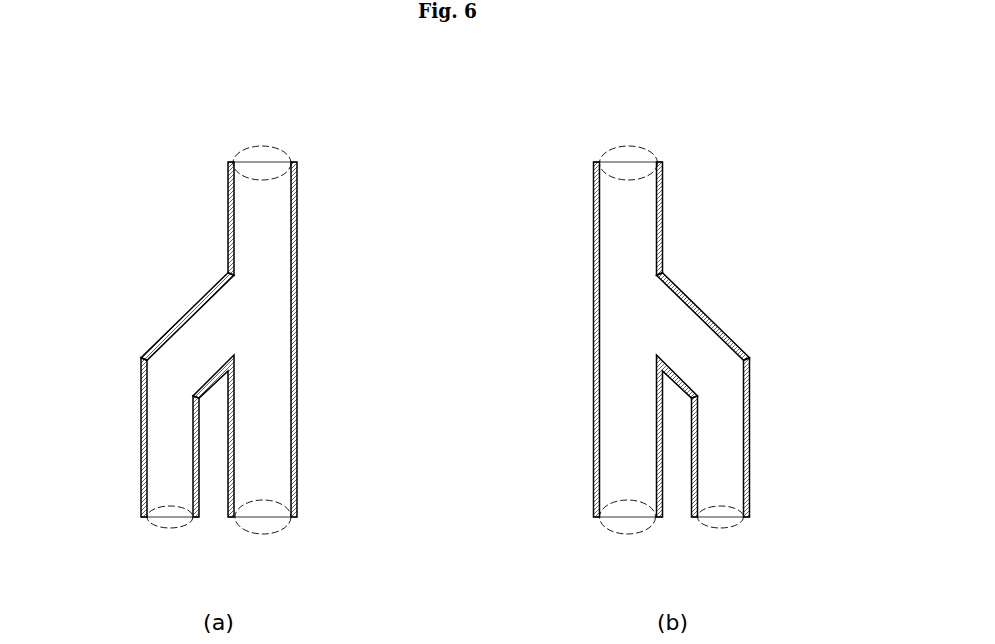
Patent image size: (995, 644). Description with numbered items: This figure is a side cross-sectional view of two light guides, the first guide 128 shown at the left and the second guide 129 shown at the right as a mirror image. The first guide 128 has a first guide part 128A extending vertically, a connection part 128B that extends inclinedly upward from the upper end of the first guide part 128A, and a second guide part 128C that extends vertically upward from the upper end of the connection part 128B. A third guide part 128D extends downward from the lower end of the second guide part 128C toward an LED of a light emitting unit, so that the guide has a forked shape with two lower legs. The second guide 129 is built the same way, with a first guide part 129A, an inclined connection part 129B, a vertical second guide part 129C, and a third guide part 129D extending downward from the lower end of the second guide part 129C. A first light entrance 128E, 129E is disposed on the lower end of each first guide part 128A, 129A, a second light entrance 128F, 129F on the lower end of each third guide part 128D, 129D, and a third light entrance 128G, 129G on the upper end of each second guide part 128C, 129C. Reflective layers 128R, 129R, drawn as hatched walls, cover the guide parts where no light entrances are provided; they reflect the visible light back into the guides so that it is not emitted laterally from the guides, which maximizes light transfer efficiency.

The first guide 128 is at (163, 98).
The first guide part 128A is at (160, 431).
The connection part 128B is at (177, 353).
The second guide part 128C is at (250, 218).
The third guide part 128D is at (277, 432).
The first light entrance 128E is at (170, 528).
The second light entrance 128F is at (263, 535).
The third light entrance 128G is at (262, 146).
The reflective layer 128R is at (298, 273).
The second guide 129 is at (727, 98).
The first guide part 129A is at (732, 432).
The connection part 129B is at (714, 353).
The second guide part 129C is at (641, 218).
The third guide part 129D is at (614, 430).
The first light entrance 129E is at (720, 528).
The second light entrance 129F is at (628, 535).
The third light entrance 129G is at (628, 146).
The reflective layer 129R is at (592, 274).